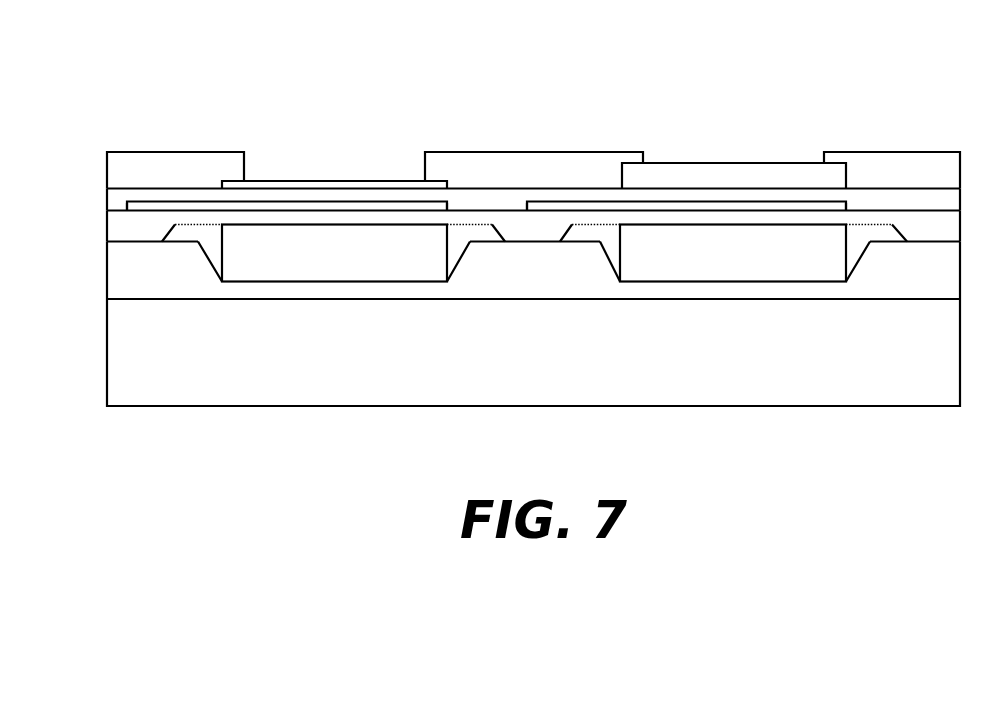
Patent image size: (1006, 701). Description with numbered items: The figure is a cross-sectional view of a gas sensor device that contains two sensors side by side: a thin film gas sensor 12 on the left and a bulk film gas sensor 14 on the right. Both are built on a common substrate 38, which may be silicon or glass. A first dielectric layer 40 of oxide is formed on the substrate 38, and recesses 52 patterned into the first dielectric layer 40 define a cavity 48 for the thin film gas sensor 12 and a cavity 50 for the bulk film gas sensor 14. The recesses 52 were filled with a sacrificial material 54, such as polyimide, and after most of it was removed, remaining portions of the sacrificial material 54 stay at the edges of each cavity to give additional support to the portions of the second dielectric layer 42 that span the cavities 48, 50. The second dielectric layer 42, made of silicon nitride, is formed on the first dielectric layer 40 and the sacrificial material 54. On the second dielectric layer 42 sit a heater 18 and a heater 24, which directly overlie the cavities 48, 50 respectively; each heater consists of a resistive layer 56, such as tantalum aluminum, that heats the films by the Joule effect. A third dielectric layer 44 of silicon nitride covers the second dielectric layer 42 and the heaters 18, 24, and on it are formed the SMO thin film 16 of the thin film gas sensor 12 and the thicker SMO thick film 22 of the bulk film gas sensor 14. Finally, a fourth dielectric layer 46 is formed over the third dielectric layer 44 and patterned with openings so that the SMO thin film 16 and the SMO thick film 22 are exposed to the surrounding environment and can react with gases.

The thin film gas sensor 12 is at (323, 90).
The bulk film gas sensor 14 is at (728, 73).
The SMO thin film 16 is at (325, 182).
The heater 18 is at (158, 205).
The SMO thick film 22 is at (727, 172).
The heater 24 is at (587, 205).
The substrate 38 is at (106, 347).
The first dielectric layer 40 is at (106, 272).
The second dielectric layer 42 is at (106, 227).
The third dielectric layer 44 is at (106, 198).
The fourth dielectric layer 46 is at (106, 173).
The cavity 48 is at (344, 262).
The cavity 50 is at (744, 262).
The recess 52 is at (209, 269).
The sacrificial material 54 is at (184, 235).
The resistive layer 56 is at (190, 205).